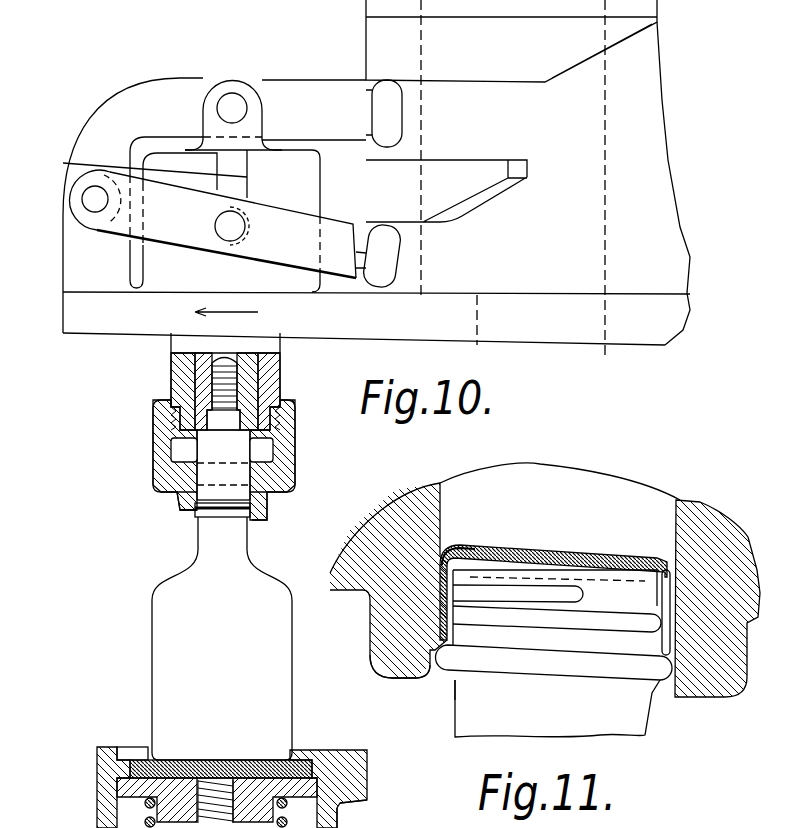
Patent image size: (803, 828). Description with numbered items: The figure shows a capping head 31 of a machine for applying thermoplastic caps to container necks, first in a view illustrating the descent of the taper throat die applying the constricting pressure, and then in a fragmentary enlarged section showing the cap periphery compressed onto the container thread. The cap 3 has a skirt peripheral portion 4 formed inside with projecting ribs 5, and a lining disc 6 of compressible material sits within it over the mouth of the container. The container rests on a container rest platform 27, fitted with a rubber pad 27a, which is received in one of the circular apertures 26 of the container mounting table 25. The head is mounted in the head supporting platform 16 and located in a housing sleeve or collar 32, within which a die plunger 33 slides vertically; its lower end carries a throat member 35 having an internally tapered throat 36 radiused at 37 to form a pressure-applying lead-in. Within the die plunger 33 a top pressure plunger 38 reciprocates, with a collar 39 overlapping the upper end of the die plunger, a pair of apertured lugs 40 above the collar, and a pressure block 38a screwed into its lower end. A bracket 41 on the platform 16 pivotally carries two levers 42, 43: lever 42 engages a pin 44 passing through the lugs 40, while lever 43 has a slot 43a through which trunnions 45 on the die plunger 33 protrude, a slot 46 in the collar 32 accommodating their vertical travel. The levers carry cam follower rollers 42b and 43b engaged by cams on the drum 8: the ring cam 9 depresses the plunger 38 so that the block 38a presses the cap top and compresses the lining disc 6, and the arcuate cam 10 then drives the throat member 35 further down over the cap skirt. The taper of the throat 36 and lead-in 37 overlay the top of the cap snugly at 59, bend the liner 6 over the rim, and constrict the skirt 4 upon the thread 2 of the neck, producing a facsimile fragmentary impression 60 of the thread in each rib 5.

In FIG. 11, the thread 2 is at (613, 621).
In FIG. 10, the cap 3 is at (205, 500).
In FIG. 11, the skirt peripheral portion 4 is at (673, 678).
In FIG. 11, the projecting ribs 5 is at (453, 578).
In FIG. 11, the lining disc 6 is at (605, 555).
In FIG. 10, the drum 8 is at (565, 179).
In FIG. 10, the ring cam 9 is at (522, 57).
In FIG. 10, the arcuate cam 10 is at (467, 199).
In FIG. 10, the head supporting platform 16 is at (111, 326).
In FIG. 10, the container mounting table 25 is at (350, 773).
In FIG. 10, the circular apertures 26 is at (340, 798).
In FIG. 10, the container rest platforms 27 is at (312, 778).
In FIG. 10, the rubber pads 27a is at (140, 760).
In FIG. 10, the capping heads 31 is at (296, 418).
In FIG. 10, the housing sleeve or collar 32 is at (252, 230).
In FIG. 10, the die plunger 33 is at (185, 388).
In FIG. 10, the throat member 35 is at (290, 446).
In FIG. 11, the throat member 35 is at (393, 524).
In FIG. 10, the internally tapered annulus or throat 36 is at (252, 493).
In FIG. 11, the internally tapered annulus or throat 36 is at (437, 634).
In FIG. 10, the radius or lead-in 37 is at (253, 522).
In FIG. 11, the radius or lead-in 37 is at (422, 674).
In FIG. 10, the top pressure plunger 38 is at (200, 421).
In FIG. 10, the pressure block 38a is at (207, 473).
In FIG. 11, the pressure block 38a is at (583, 514).
In FIG. 10, the collar 39 is at (200, 147).
In FIG. 10, the apertured lugs 40 is at (255, 95).
In FIG. 10, the bracket 41 is at (77, 277).
In FIG. 10, the lever 42 is at (281, 82).
In FIG. 10, the cam follower roller 42b is at (384, 95).
In FIG. 10, the lever 43 is at (212, 237).
In FIG. 10, the slot 43a is at (247, 242).
In FIG. 10, the cam follower roller 43b is at (386, 251).
In FIG. 10, the pin 44 is at (232, 97).
In FIG. 10, the trunnions 45 is at (238, 218).
In FIG. 10, the slot 46 is at (138, 168).
In FIG. 11, the overlaid cap top 59 is at (457, 550).
In FIG. 11, the facsimile fragmentary impression 60 is at (457, 650).